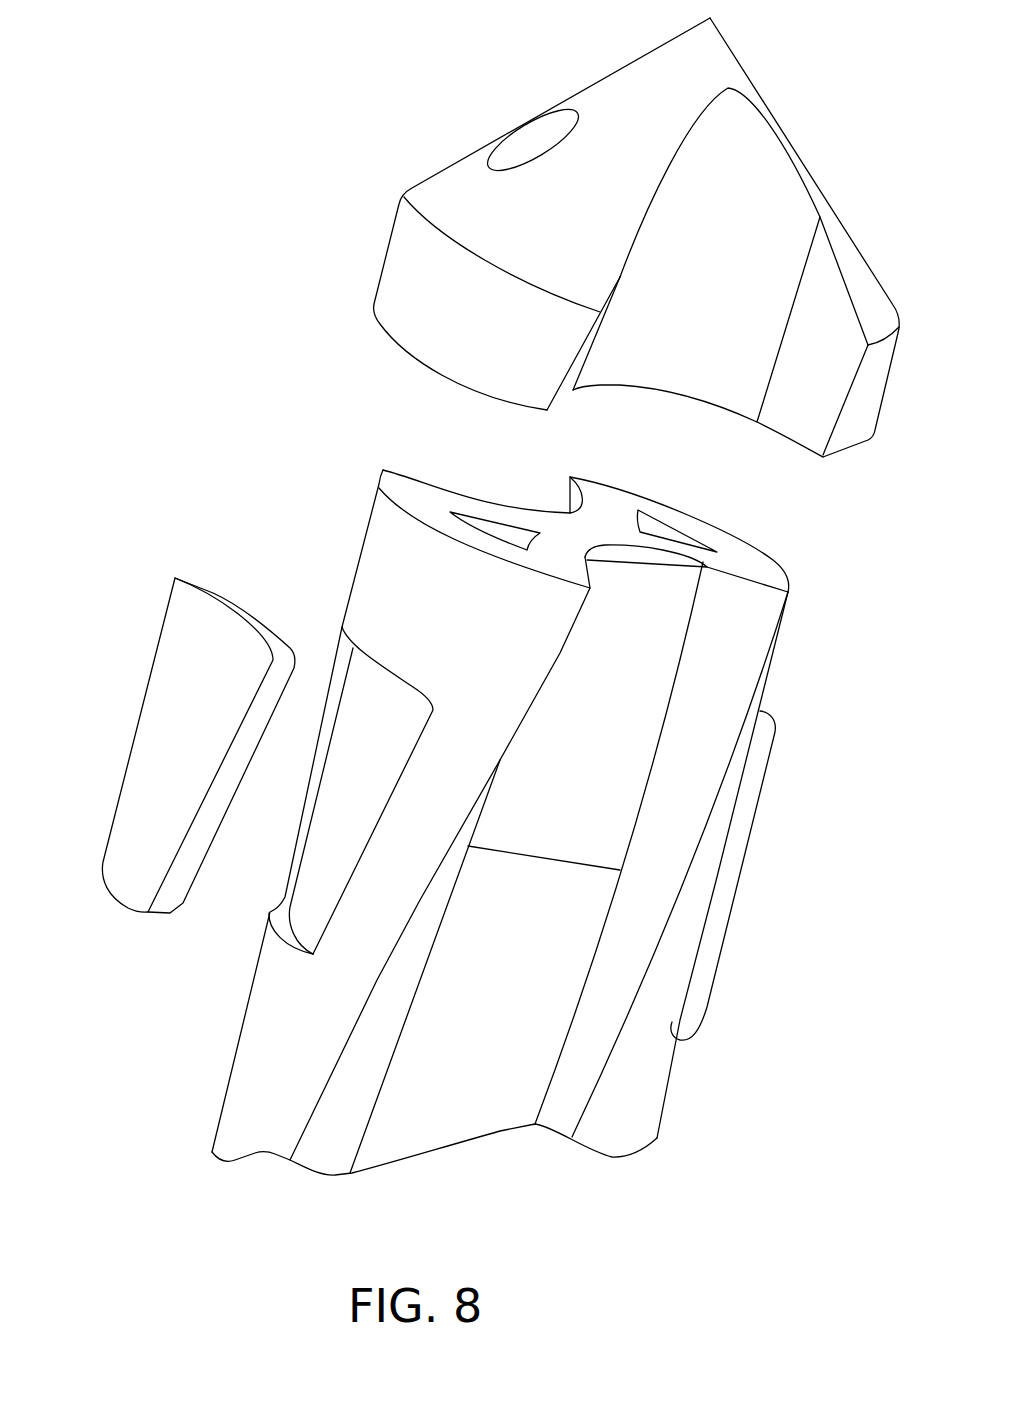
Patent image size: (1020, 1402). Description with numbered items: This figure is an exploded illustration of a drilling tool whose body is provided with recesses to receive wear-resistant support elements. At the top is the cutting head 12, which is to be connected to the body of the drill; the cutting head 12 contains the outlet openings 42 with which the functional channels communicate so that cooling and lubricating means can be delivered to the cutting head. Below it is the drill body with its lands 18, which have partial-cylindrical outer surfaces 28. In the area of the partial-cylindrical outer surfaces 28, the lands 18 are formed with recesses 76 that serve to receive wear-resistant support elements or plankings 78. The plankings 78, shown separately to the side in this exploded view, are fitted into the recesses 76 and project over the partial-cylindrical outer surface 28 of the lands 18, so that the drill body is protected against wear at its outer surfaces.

The cutting head 12 is at (428, 198).
The outlet openings 42 is at (533, 137).
The lands 18 is at (397, 552).
The recesses 76 is at (318, 850).
The partial-cylindrical outer surfaces 28 is at (673, 1078).
The plankings 78 is at (182, 688).